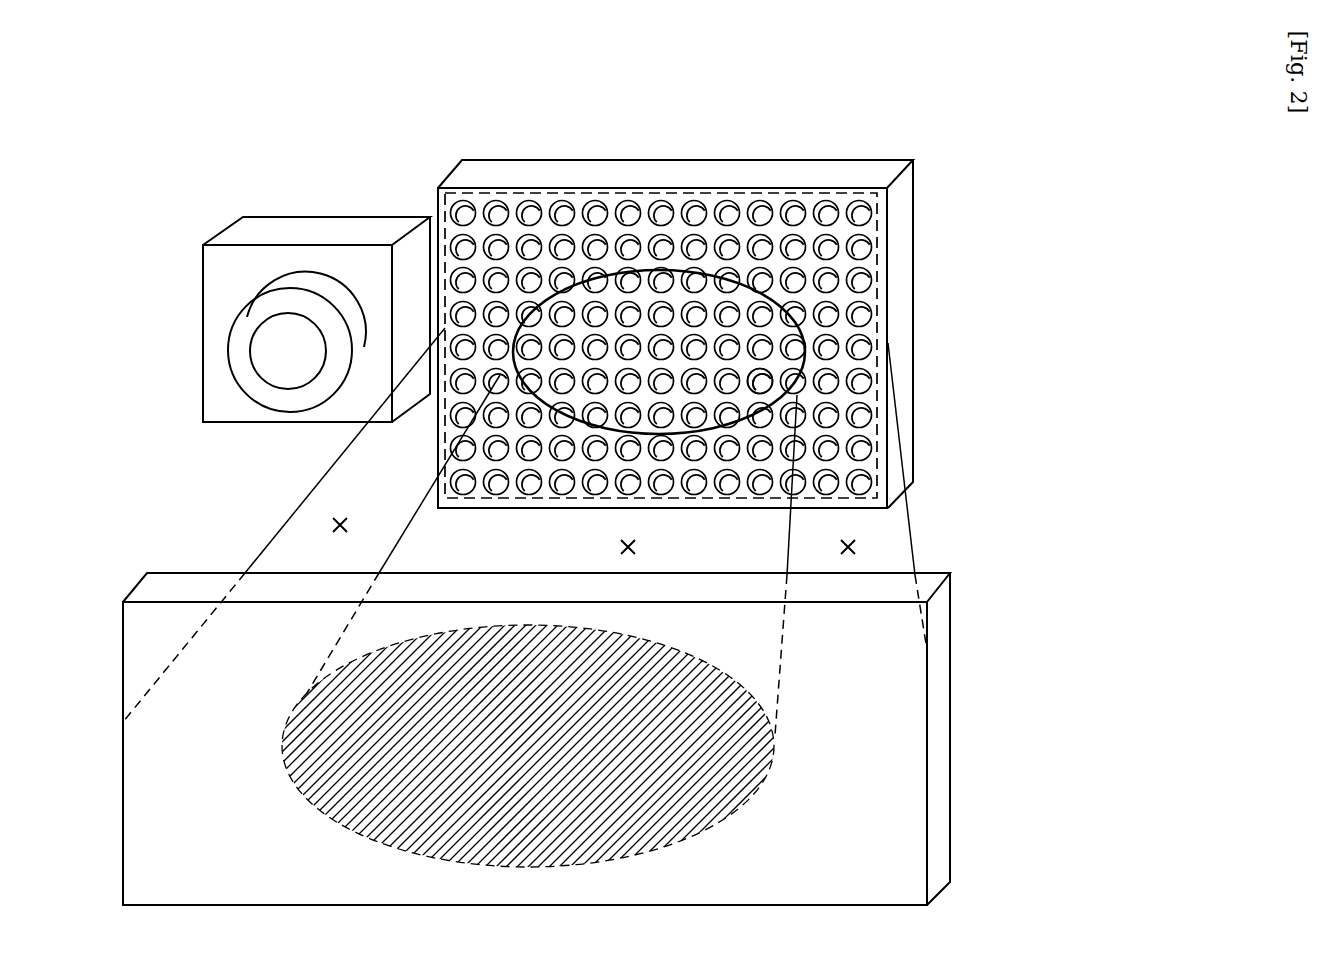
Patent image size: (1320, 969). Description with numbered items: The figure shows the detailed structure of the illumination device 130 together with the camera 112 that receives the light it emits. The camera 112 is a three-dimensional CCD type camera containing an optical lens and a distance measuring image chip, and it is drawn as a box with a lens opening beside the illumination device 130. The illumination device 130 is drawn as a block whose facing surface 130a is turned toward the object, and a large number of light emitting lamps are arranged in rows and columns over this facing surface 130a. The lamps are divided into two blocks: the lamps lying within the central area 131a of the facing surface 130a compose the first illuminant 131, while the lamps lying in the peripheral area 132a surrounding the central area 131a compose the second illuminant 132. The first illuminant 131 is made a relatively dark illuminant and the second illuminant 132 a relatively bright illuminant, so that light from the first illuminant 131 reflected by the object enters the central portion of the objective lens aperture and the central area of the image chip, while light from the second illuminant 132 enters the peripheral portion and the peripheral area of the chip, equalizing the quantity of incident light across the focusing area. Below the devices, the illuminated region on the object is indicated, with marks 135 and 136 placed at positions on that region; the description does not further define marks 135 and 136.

The camera 112 is at (323, 214).
The illumination device 130 is at (721, 294).
The facing surface 130a is at (884, 186).
The first illuminant 131 is at (762, 369).
The central area 131a is at (865, 263).
The second illuminant 132 is at (867, 237).
The peripheral area 132a is at (890, 300).
The illumination center position 135 is at (640, 545).
The reference position mark 136 is at (333, 527).